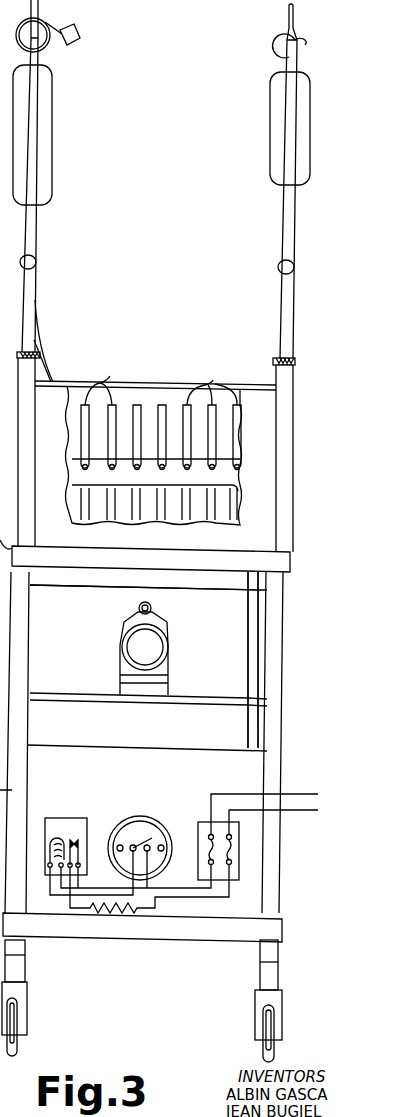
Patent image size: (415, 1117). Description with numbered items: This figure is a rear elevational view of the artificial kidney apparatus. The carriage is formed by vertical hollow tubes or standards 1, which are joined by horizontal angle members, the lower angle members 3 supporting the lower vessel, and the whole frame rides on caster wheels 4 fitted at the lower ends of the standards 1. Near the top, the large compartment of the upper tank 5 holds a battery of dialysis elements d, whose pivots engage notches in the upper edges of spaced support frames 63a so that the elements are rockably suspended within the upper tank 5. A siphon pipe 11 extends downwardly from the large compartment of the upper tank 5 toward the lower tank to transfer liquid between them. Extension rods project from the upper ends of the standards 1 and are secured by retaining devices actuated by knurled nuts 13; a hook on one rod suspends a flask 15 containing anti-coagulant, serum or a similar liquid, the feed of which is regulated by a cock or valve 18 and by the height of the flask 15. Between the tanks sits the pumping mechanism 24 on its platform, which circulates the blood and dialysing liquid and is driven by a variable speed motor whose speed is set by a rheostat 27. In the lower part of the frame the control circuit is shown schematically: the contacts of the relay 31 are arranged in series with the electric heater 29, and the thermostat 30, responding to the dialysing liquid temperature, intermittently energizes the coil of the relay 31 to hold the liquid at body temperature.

The vertical tubes or standards 1 is at (277, 770).
The lower angle members 3 is at (19, 355).
The caster wheels 4 is at (17, 1012).
The upper tank 5 is at (160, 381).
The dialysis elements d is at (96, 392).
The siphon pipe 11 is at (248, 663).
The knurled nuts 13 is at (297, 360).
The flask 15 is at (310, 88).
The cock or valve 18 is at (298, 268).
The pumping mechanism 24 is at (68, 598).
The rheostat 27 is at (158, 645).
The electric heater 29 is at (130, 905).
The thermostat 30 is at (140, 826).
The relay 31 is at (60, 818).
The support frames 63a is at (240, 486).